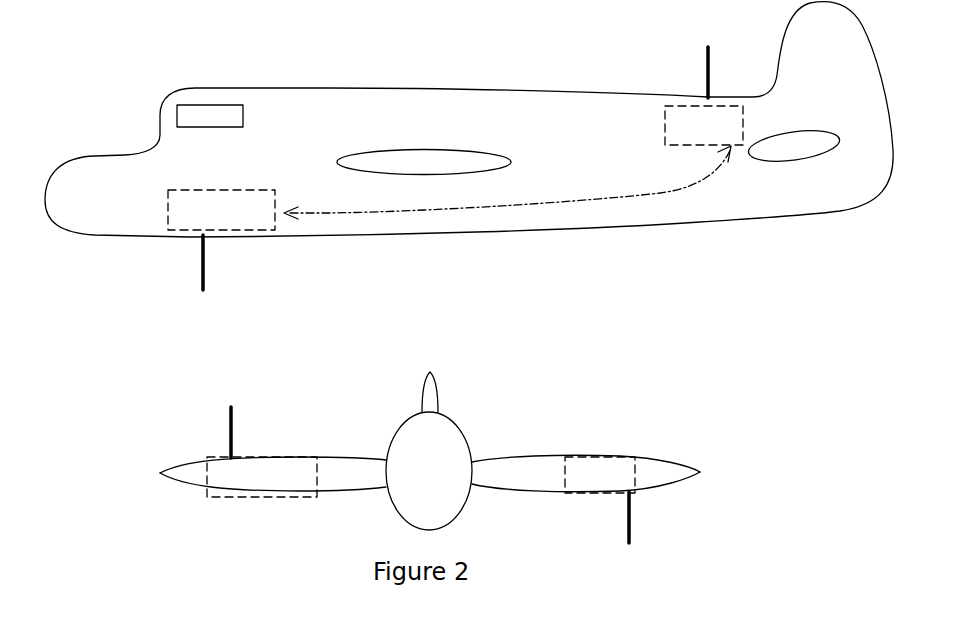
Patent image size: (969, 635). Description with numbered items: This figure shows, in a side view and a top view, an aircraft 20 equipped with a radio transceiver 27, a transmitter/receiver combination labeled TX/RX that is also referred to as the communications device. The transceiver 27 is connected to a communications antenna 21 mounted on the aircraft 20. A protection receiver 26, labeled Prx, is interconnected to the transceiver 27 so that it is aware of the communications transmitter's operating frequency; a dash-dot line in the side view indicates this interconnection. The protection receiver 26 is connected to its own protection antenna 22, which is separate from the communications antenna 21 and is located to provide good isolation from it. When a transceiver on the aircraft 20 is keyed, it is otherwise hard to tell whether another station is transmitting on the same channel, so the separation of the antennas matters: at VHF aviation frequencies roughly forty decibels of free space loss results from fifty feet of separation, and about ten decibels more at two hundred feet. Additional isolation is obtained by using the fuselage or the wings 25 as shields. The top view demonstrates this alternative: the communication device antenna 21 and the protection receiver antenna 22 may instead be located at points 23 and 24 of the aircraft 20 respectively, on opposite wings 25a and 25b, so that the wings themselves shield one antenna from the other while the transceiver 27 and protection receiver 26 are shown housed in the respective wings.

The aircraft 20 is at (469, 266).
The communications antenna 21 is at (165, 262).
The protection antenna 22 is at (670, 72).
The point of the aircraft 23 is at (272, 432).
The point of the aircraft 24 is at (669, 517).
The wing 25 is at (460, 164).
The wing 25a is at (626, 473).
The wing 25b is at (232, 474).
The protection receiver 26 is at (654, 299).
The radio transceiver 27 is at (212, 372).